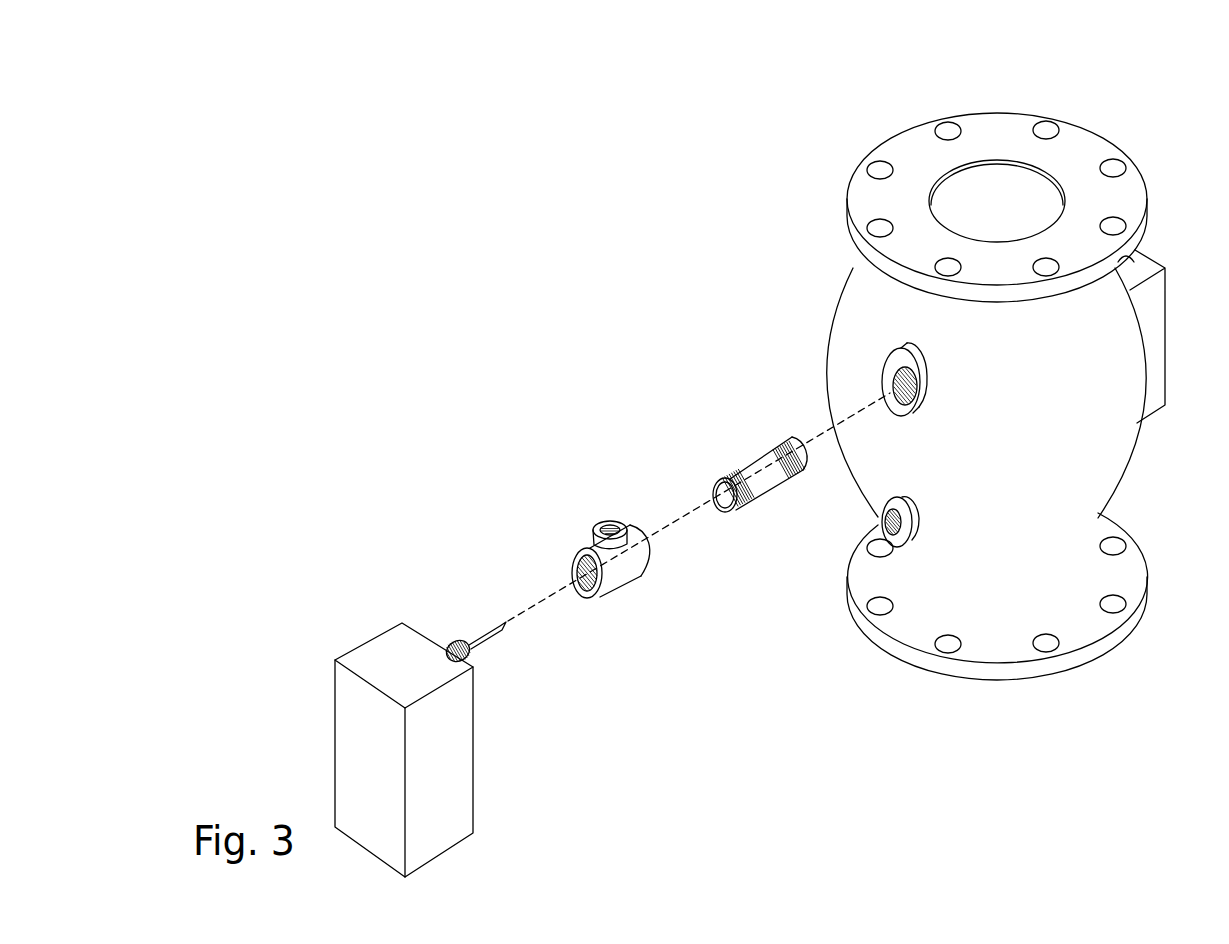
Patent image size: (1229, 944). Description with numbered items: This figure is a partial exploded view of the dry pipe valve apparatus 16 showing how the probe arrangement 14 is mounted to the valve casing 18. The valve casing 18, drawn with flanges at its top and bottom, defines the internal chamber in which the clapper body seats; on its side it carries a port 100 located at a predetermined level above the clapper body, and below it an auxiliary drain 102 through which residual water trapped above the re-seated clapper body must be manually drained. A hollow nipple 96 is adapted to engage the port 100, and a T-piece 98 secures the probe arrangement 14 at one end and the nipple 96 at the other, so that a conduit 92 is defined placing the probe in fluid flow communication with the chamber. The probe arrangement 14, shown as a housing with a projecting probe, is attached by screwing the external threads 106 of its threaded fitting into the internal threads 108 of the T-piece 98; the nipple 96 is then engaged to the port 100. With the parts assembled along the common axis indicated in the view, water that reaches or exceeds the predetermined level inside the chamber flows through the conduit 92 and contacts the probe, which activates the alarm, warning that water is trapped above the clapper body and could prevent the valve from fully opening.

The probe arrangement 14 is at (342, 732).
The dry pipe valve apparatus 16 is at (972, 364).
The valve casing 18 is at (1097, 445).
The conduit 92 is at (582, 597).
The hollow nipple 96 is at (741, 450).
The T-piece 98 is at (604, 557).
The port 100 is at (892, 382).
The auxiliary drain 102 is at (883, 518).
The external threads 106 is at (582, 557).
The internal threads 108 is at (758, 462).